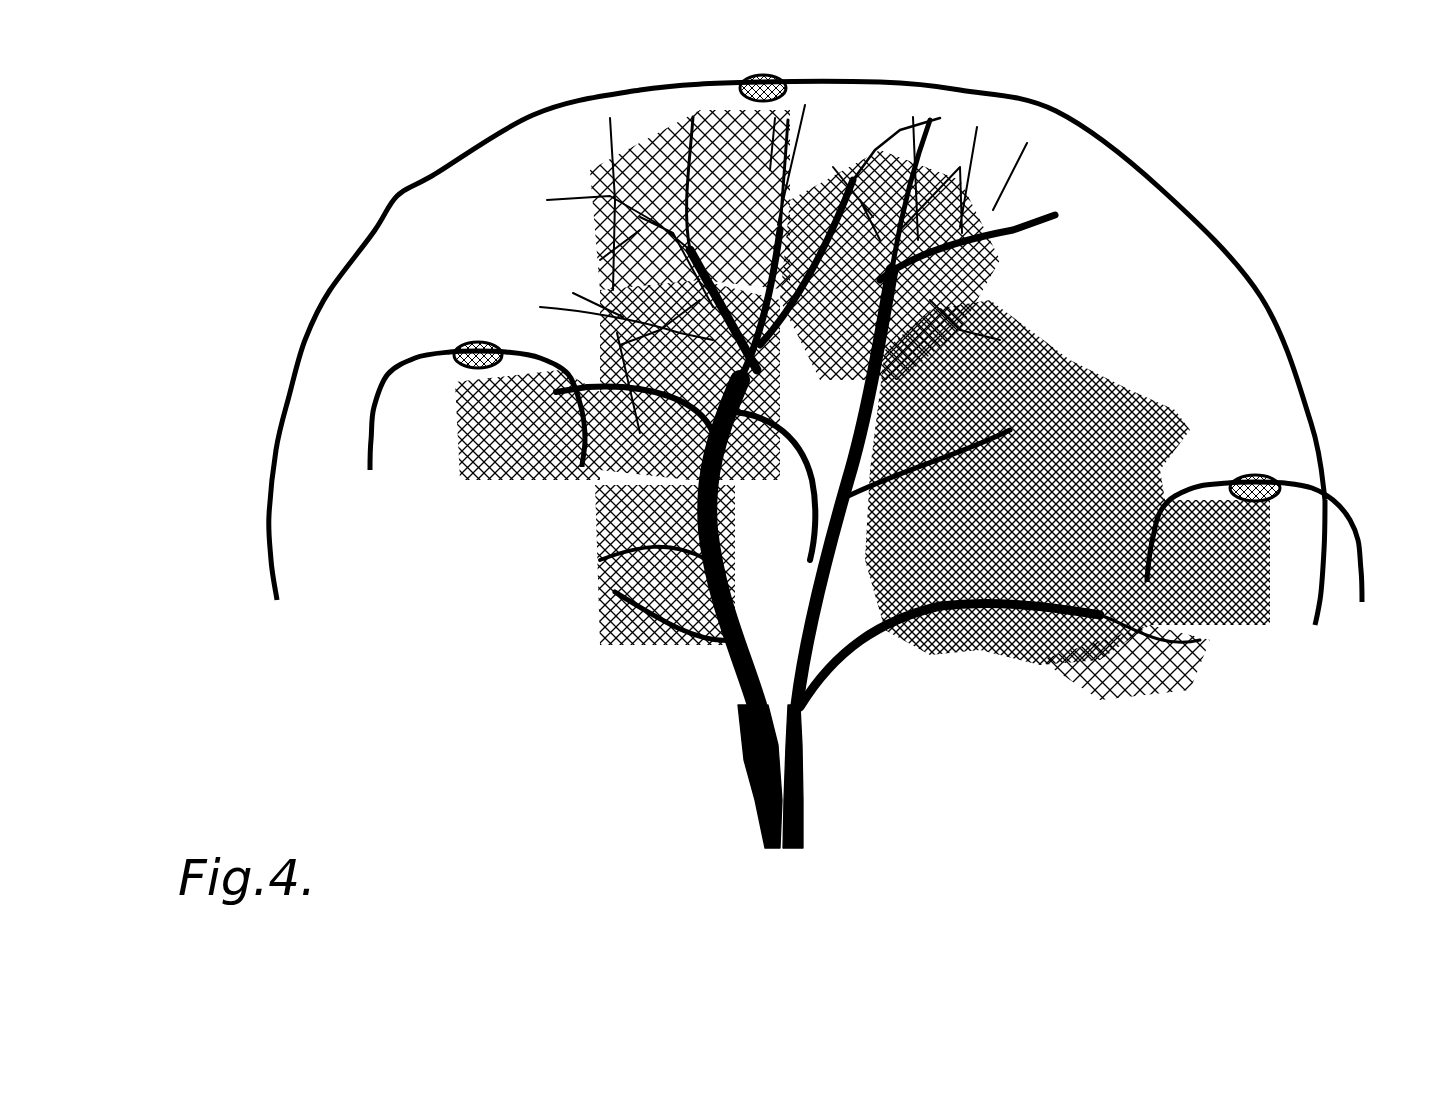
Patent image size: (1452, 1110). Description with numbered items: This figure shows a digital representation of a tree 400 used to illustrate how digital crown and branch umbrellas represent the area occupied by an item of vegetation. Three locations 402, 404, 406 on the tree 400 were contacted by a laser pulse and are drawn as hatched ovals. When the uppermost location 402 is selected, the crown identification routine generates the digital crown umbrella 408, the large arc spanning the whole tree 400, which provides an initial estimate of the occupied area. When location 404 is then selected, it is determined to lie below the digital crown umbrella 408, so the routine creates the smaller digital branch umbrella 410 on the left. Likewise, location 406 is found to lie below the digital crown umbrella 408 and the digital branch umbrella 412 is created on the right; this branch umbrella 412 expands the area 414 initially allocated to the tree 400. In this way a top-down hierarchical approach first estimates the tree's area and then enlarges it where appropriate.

The tree 400 is at (330, 695).
The location 402 is at (740, 78).
The location 404 is at (457, 345).
The location 406 is at (1250, 478).
The digital crown umbrella 408 is at (1007, 128).
The digital branch umbrella 410 is at (368, 471).
The digital branch umbrella 412 is at (1337, 503).
The area 414 is at (1335, 585).